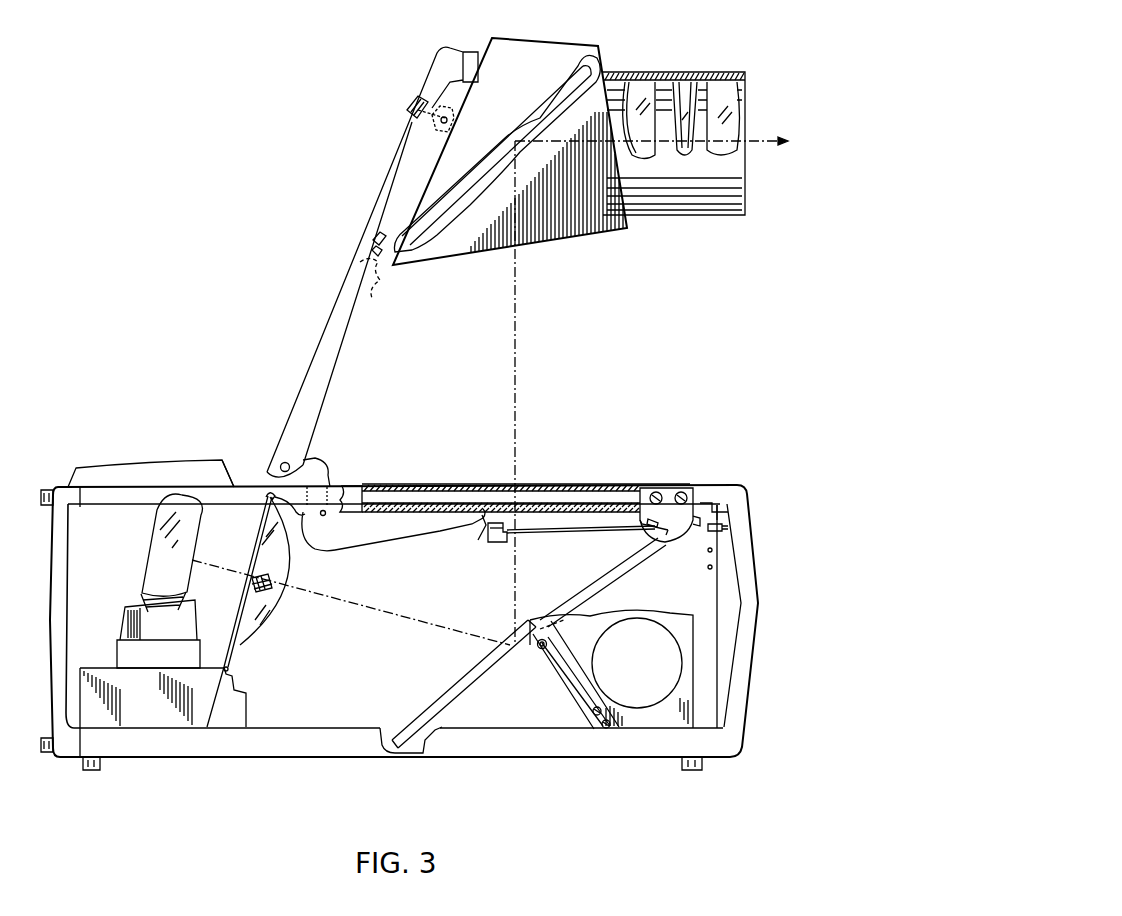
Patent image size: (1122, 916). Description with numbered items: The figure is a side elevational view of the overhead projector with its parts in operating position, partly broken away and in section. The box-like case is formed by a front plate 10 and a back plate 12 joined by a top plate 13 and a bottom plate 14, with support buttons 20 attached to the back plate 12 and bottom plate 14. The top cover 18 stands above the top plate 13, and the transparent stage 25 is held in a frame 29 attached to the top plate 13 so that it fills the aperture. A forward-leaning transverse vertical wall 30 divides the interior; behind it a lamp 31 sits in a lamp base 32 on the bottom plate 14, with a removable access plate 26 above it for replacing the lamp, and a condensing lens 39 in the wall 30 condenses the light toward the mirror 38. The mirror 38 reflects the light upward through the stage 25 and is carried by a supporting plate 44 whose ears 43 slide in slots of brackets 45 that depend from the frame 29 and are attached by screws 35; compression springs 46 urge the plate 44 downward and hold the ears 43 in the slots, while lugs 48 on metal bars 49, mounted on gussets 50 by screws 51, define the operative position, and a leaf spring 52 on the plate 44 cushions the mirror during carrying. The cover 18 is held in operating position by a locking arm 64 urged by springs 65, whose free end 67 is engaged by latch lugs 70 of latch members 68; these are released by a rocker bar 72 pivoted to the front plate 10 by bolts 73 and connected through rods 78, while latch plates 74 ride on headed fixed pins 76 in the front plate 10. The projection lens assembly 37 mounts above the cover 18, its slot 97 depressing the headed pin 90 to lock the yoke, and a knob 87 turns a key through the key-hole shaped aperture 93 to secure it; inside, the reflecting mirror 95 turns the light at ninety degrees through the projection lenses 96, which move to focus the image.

The front plate 10 is at (745, 573).
The back plate 12 is at (58, 586).
The top plate 13 is at (229, 500).
The bottom plate 14 is at (220, 750).
The top cover 18 is at (305, 382).
The support buttons 20 is at (41, 498).
The transparent stage 25 is at (492, 486).
The access plate 26 is at (144, 472).
The frame 29 is at (357, 486).
The transverse vertical wall 30 is at (243, 607).
The lamp 31 is at (183, 556).
The lamp base 32 is at (171, 628).
The screws 35 is at (681, 492).
The projection lens assembly 37 is at (650, 195).
The mirror 38 is at (426, 714).
The condensing lens 39 is at (247, 650).
The ears 43 is at (697, 520).
The supporting plate 44 is at (655, 548).
The brackets 45 is at (665, 529).
The compression springs 46 is at (647, 522).
The lugs 48 is at (541, 652).
The metal bars 49 is at (579, 689).
The gussets 50 is at (664, 718).
The screws 51 is at (605, 730).
The leaf spring 52 is at (421, 755).
The locking arm 64 is at (352, 537).
The springs 65 is at (330, 520).
The free ends 67 is at (481, 527).
The latch members 68 is at (493, 543).
The latch lugs 70 is at (487, 542).
The rocker bar 72 is at (749, 540).
The bolts 73 is at (707, 550).
The latch plates 74 is at (718, 506).
The headed fixed pins 76 is at (709, 568).
The rods 78 is at (571, 536).
The knob 87 is at (416, 99).
The headed pin 90 is at (381, 271).
The key-hole shaped aperture 93 is at (430, 128).
The reflecting mirror 95 is at (428, 243).
The projection lenses 96 is at (646, 82).
The slot 97 is at (373, 243).